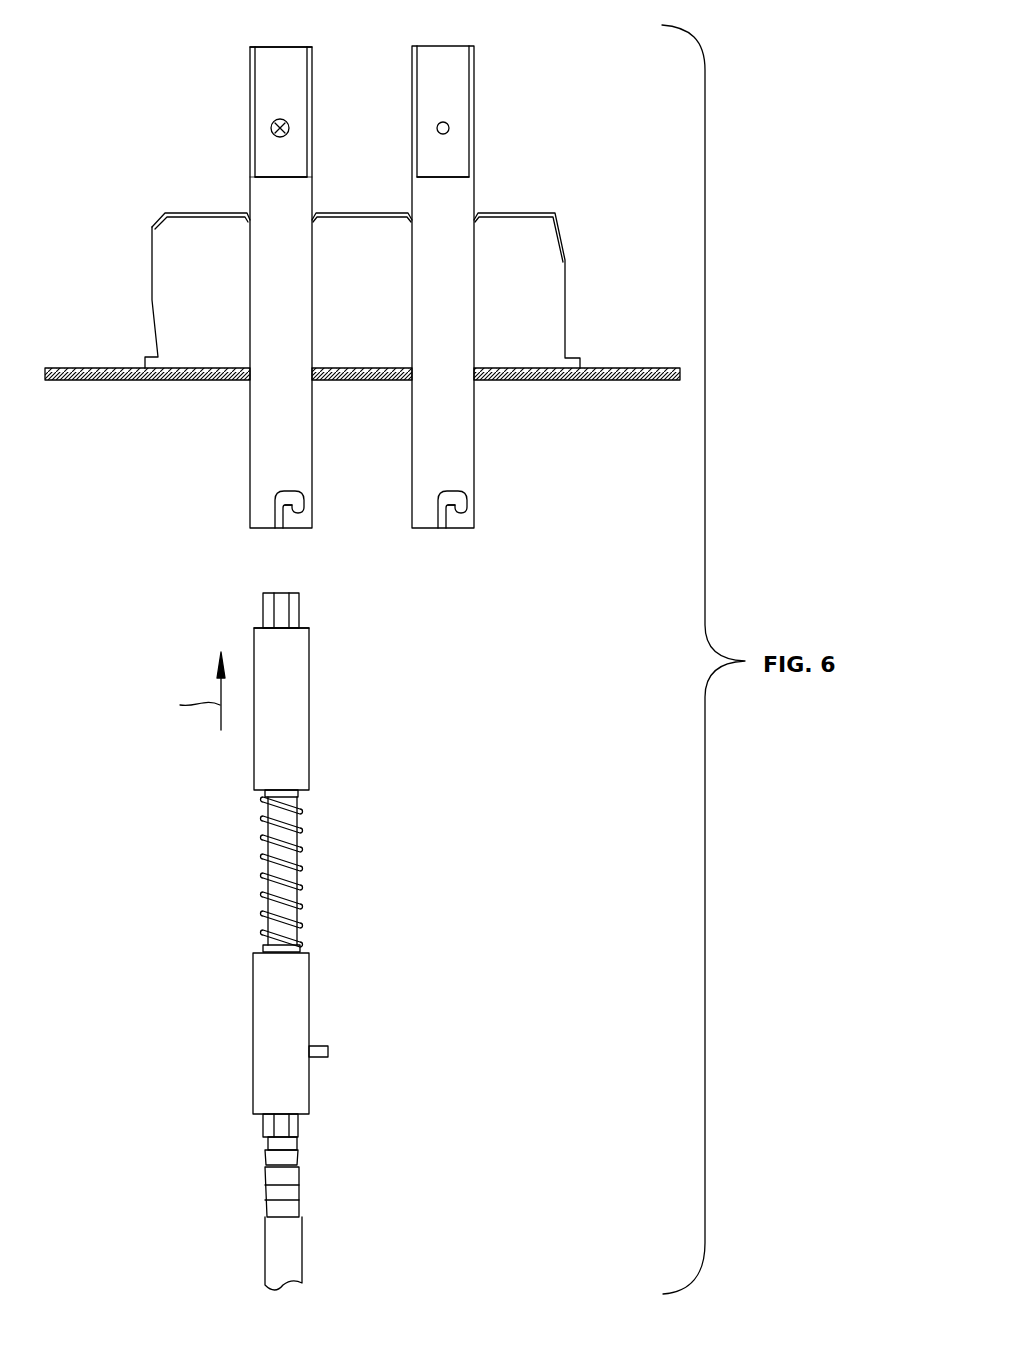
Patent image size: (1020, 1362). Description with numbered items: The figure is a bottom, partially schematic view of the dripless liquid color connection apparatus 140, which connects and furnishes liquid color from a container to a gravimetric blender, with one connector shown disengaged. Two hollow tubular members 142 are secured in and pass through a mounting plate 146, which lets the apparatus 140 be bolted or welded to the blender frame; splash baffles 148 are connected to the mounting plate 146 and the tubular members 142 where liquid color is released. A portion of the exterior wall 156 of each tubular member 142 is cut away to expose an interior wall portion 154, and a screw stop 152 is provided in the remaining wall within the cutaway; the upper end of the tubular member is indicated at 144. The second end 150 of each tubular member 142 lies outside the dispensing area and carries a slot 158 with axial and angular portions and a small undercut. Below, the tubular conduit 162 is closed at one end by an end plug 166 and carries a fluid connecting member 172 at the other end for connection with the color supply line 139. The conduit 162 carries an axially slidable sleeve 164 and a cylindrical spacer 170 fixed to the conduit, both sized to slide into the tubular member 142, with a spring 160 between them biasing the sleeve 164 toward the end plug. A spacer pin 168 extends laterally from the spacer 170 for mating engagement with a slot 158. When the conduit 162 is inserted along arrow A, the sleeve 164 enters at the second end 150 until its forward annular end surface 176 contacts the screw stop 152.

The color supply line 139 is at (285, 1243).
The dripless liquid color connection apparatus 140 is at (190, 456).
The tubular member 142 is at (244, 82).
The post top end 144 is at (282, 46).
The mounting plate 146 is at (622, 380).
The splash baffles 148 is at (168, 262).
The second end of tubular member 150 is at (298, 530).
The screw stop 152 is at (271, 128).
The interior wall portion 154 is at (285, 93).
The exterior wall 156 is at (266, 186).
The slot 158 is at (275, 530).
The spring 160 is at (300, 826).
The tubular conduit 162 is at (308, 868).
The slidable sleeve 164 is at (310, 710).
The end plug 166 is at (293, 610).
The spacer pin 168 is at (330, 1050).
The cylindrical spacer 170 is at (253, 1032).
The fluid connecting member 172 is at (266, 1195).
The forward annular end surface 176 is at (256, 628).